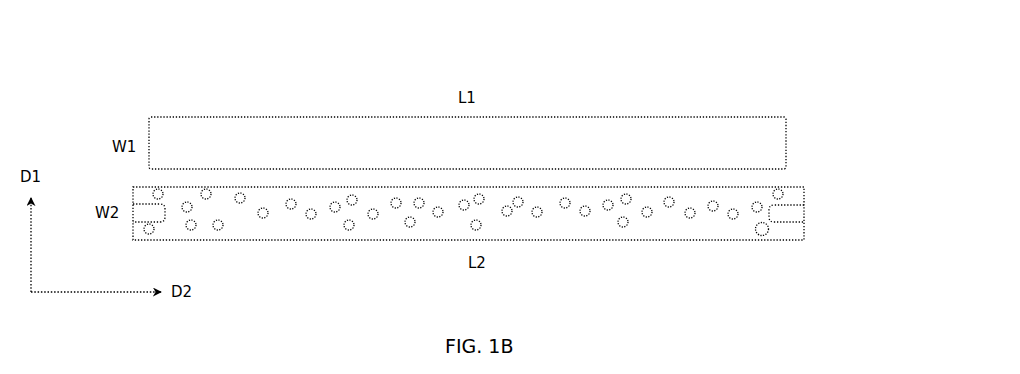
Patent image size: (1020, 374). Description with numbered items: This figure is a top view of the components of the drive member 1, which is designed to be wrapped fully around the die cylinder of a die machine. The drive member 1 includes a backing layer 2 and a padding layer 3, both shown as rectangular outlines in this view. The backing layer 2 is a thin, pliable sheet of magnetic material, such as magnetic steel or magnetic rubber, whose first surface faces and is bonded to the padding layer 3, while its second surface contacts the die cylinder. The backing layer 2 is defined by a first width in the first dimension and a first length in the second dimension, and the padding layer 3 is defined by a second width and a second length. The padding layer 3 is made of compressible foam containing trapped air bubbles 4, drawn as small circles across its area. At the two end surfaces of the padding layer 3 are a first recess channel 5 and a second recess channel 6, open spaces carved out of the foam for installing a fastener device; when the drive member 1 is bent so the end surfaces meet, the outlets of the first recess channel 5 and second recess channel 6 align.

The drive member 1 is at (739, 71).
The backing layer 2 is at (761, 115).
The padding layer 3 is at (763, 244).
The air bubbles 4 is at (631, 226).
The first recess channel 5 is at (142, 209).
The second recess channel 6 is at (789, 214).